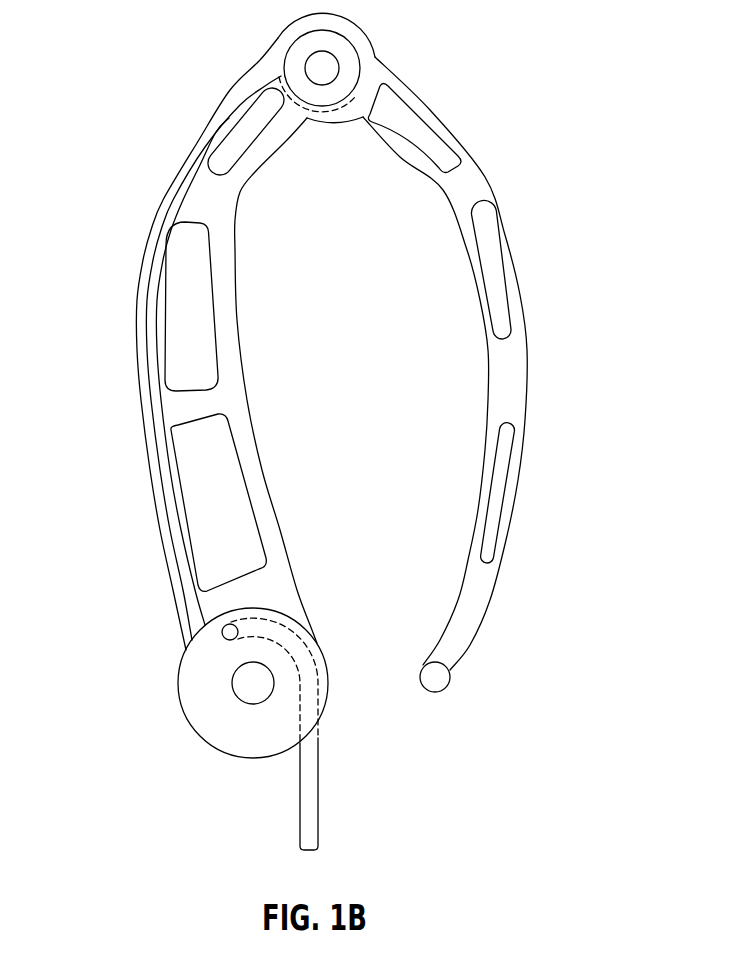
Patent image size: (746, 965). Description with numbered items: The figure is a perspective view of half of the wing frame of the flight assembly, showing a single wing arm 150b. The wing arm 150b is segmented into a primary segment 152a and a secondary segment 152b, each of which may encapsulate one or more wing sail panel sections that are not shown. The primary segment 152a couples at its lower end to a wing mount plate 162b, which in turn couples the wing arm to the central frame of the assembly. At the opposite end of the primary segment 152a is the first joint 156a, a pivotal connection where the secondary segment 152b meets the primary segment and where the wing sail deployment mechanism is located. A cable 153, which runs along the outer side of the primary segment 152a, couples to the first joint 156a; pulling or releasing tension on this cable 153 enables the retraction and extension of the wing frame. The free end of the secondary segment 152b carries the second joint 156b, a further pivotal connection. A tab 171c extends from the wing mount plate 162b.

The wing arm 150b is at (140, 103).
The primary segment 152a is at (188, 402).
The secondary segment 152b is at (507, 358).
The cable 153 is at (157, 250).
The first joint 156a is at (322, 68).
The second joint 156b is at (437, 681).
The wing mount plate 162b is at (286, 742).
The tab 171c is at (310, 778).